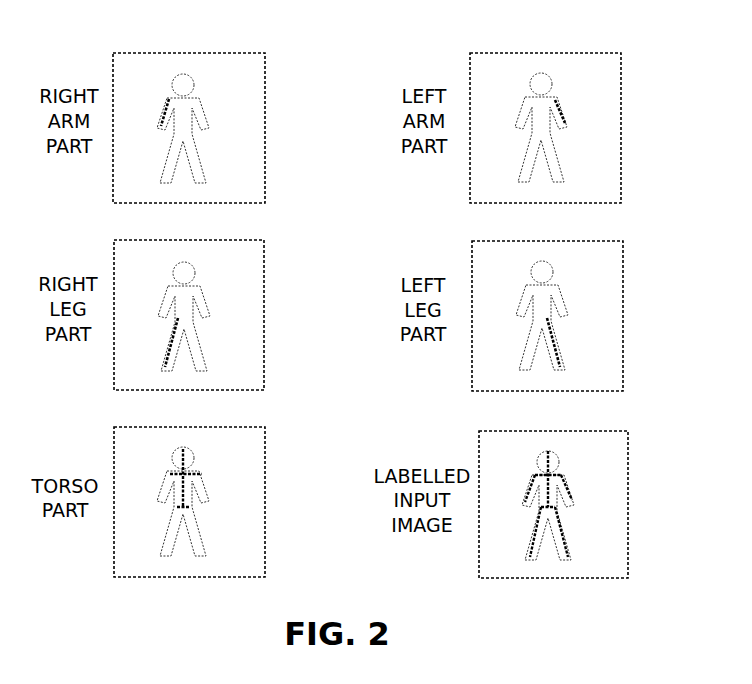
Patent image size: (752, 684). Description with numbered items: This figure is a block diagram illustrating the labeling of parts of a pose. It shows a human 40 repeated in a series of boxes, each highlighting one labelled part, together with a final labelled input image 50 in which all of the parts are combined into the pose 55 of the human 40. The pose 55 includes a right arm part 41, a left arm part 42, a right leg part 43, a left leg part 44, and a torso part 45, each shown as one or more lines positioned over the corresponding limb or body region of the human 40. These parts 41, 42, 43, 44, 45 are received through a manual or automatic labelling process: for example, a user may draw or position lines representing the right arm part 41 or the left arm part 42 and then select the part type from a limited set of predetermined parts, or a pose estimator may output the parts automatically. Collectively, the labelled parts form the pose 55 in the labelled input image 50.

The human 40 is at (207, 109).
The right arm part 41 is at (166, 101).
The left arm part 42 is at (557, 110).
The right leg part 43 is at (167, 358).
The left leg part 44 is at (557, 357).
The torso part 45 is at (210, 473).
The labelled input image 50 is at (556, 431).
The pose 55 is at (557, 520).